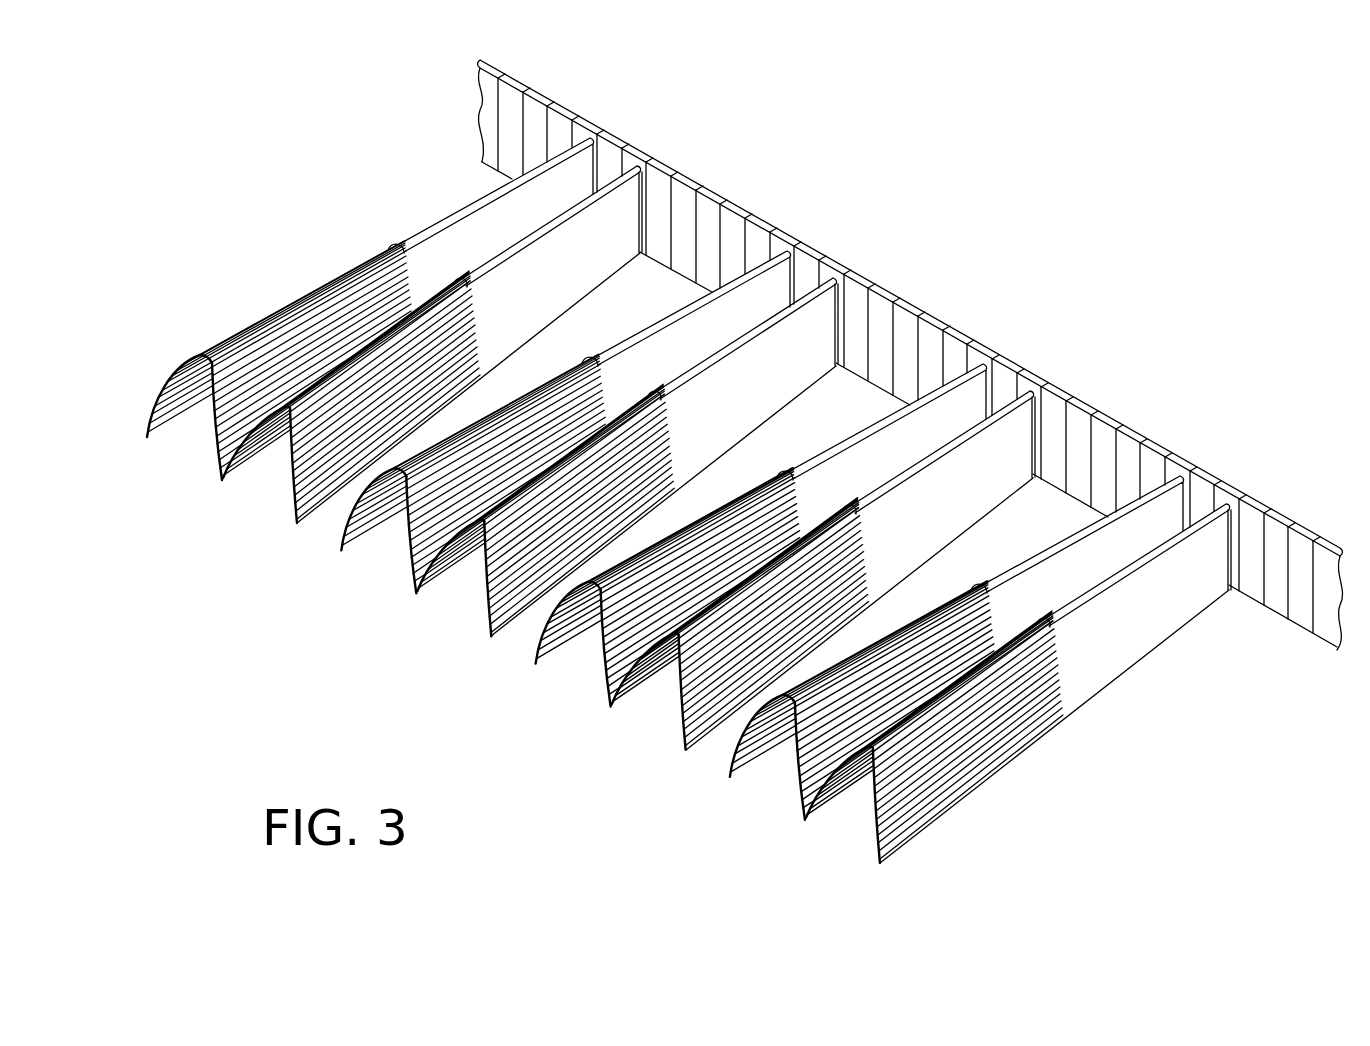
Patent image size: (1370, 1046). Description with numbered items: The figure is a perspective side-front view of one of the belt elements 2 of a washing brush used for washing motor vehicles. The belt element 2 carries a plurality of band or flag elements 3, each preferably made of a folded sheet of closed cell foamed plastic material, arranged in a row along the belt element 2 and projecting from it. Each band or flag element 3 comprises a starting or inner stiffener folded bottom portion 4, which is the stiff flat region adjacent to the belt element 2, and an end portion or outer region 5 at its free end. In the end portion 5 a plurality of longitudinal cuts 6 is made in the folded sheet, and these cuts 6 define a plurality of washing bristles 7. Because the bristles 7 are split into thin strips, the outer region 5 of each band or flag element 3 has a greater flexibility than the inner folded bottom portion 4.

The belt element 2 is at (942, 320).
The band or flag element 3 is at (689, 498).
The inner stiffener folded bottom portion 4 is at (760, 264).
The end portion 5 is at (618, 536).
The longitudinal cuts 6 is at (612, 606).
The washing bristles 7 is at (497, 583).